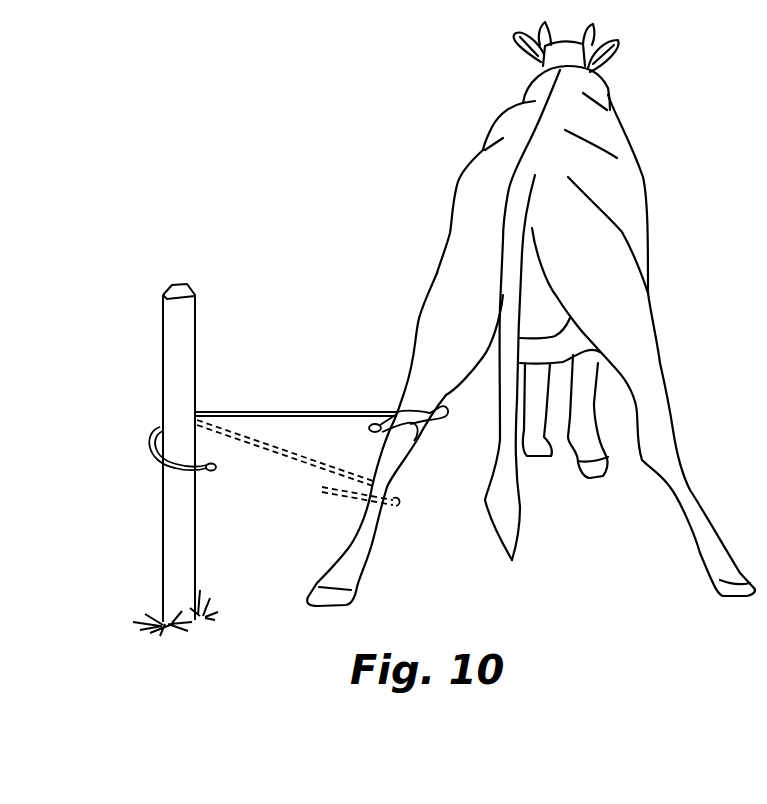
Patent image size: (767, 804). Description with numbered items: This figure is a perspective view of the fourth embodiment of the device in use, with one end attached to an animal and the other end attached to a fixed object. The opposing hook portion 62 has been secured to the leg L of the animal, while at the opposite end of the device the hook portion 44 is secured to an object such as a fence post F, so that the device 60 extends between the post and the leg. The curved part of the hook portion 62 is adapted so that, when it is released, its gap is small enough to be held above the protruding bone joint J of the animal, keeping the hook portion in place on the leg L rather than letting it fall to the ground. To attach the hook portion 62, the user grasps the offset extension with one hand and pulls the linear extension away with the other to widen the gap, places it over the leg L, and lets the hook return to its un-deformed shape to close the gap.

The hook portion 44 is at (153, 438).
The bar 60 is at (301, 384).
The opposing hook portion 62 is at (451, 436).
The fence post F is at (185, 367).
The protruding bone joint J is at (400, 433).
The leg L is at (432, 330).